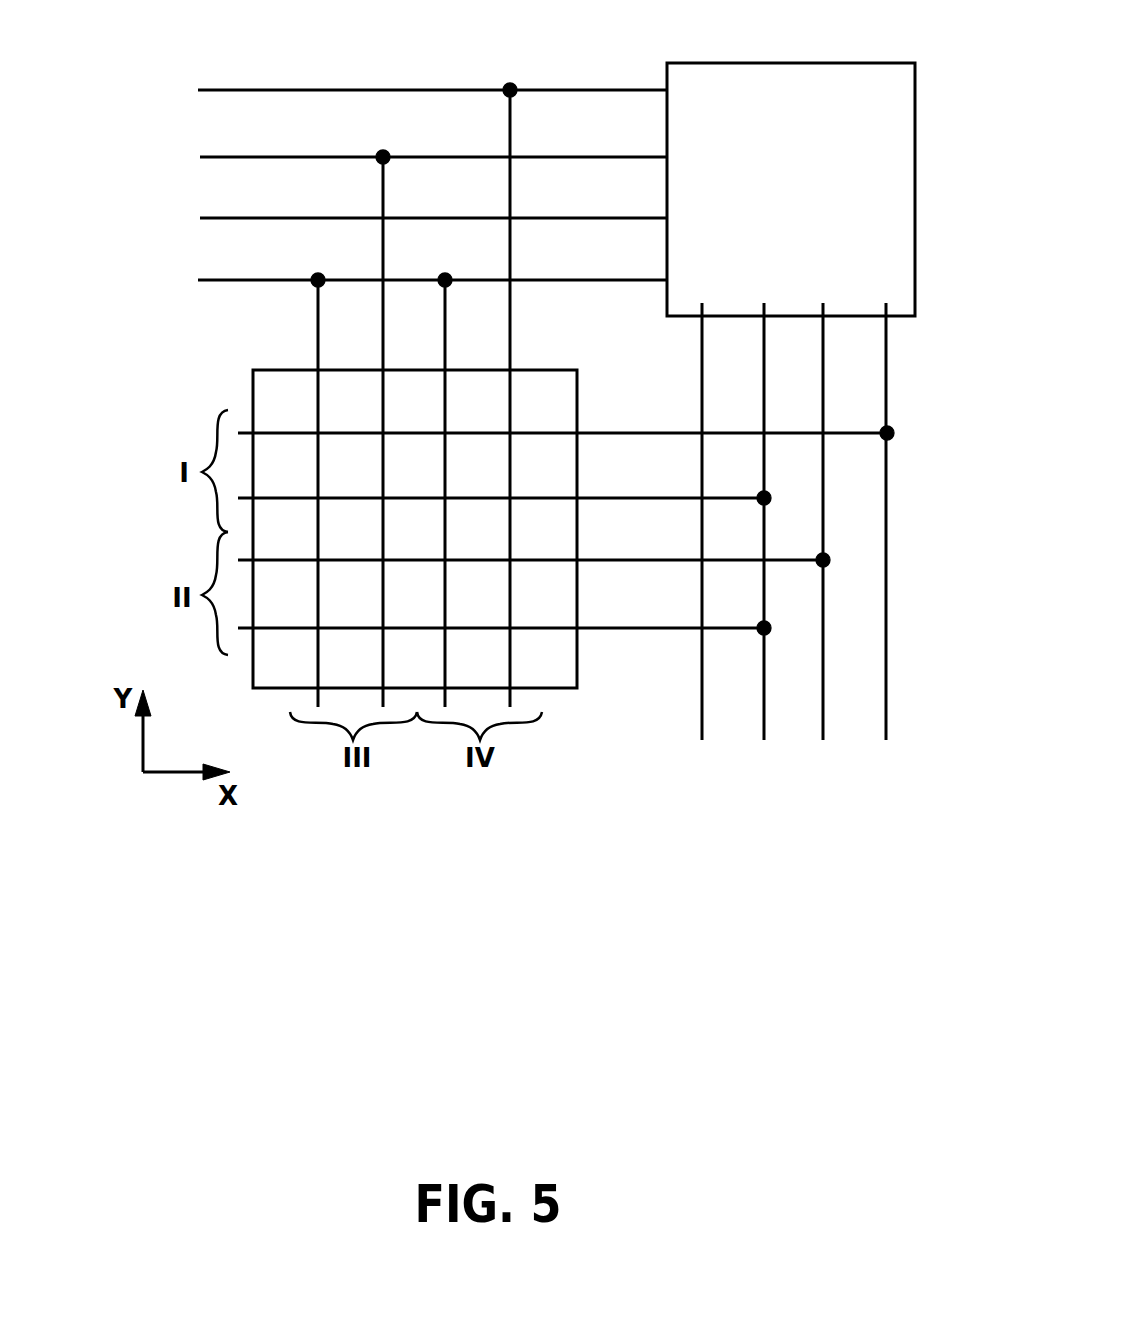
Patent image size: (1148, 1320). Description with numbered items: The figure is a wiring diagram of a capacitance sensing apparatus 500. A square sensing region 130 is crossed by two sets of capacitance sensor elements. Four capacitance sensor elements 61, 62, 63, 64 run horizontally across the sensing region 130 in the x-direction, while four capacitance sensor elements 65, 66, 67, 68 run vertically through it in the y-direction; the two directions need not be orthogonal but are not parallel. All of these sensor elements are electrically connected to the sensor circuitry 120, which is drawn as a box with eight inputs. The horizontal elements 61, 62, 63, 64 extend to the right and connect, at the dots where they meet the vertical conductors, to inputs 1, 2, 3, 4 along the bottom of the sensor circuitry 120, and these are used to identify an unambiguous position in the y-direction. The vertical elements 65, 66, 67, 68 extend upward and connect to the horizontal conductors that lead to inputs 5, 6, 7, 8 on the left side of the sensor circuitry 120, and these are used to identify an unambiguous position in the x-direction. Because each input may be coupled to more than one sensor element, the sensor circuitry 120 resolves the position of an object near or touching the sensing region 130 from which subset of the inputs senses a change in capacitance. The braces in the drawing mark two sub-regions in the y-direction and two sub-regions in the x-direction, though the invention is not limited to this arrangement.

The capacitance sensing apparatus 500 is at (308, 40).
The sensor circuitry 120 is at (770, 234).
The sensing region 130 is at (243, 366).
The capacitance sensor element 61 is at (645, 432).
The capacitance sensor element 62 is at (645, 497).
The capacitance sensor element 63 is at (645, 559).
The capacitance sensor element 64 is at (645, 627).
The capacitance sensor element 65 is at (315, 345).
The capacitance sensor element 66 is at (380, 345).
The capacitance sensor element 67 is at (442, 345).
The capacitance sensor element 68 is at (507, 345).
The input 1 is at (705, 506).
The input 2 is at (760, 506).
The input 3 is at (820, 506).
The input 4 is at (882, 506).
The input 5 is at (446, 91).
The input 6 is at (447, 157).
The input 7 is at (447, 219).
The input 8 is at (446, 271).